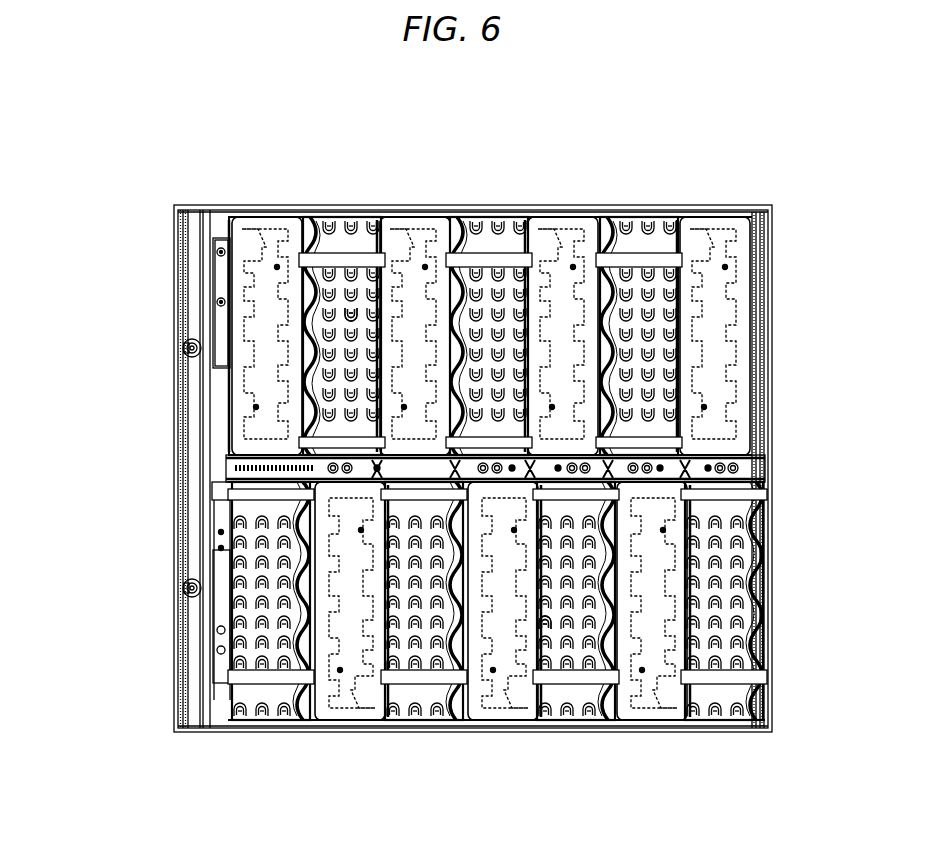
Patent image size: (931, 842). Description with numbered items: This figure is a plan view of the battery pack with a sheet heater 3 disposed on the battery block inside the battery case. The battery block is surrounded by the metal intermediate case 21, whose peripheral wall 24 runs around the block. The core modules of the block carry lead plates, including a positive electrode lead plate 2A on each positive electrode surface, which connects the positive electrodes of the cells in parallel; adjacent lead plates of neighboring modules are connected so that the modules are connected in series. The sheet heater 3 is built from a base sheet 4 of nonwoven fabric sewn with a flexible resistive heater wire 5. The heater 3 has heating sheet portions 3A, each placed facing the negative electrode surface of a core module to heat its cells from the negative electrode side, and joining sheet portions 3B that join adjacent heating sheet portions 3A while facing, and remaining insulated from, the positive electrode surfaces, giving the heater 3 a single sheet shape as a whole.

The intermediate case 21 is at (150, 403).
The peripheral wall 24 is at (593, 207).
The heater wire 5 is at (220, 276).
The base sheet 4 is at (262, 317).
The sheet heater 3 is at (258, 146).
The heating sheet portion 3A is at (260, 207).
The joining sheet portion 3B is at (351, 207).
The positive electrode lead plate 2A is at (353, 318).